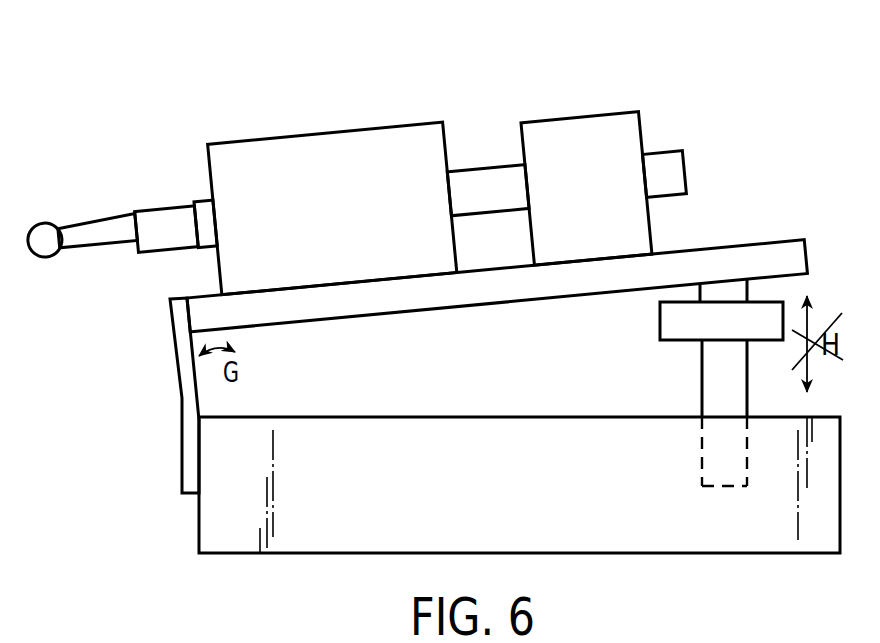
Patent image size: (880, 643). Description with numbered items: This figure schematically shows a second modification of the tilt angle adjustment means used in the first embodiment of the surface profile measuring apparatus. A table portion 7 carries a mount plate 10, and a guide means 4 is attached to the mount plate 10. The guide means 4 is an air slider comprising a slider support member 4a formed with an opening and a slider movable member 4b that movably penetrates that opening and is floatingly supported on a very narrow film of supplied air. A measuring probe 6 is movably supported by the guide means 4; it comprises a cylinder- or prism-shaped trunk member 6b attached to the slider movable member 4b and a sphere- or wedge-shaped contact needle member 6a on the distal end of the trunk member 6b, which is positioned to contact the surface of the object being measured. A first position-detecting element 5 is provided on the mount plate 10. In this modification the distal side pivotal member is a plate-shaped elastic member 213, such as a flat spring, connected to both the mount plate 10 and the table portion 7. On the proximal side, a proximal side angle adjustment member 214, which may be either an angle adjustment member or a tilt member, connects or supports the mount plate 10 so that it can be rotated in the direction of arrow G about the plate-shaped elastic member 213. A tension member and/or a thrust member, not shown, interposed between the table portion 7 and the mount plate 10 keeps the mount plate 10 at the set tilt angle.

The guide means 4 is at (345, 149).
The slider support member 4a is at (277, 147).
The slider movable member 4b is at (200, 210).
The first position-detecting element 5 is at (588, 130).
The measuring probe 6 is at (105, 260).
The contact needle member 6a is at (42, 237).
The trunk member 6b is at (146, 225).
The table portion 7 is at (767, 541).
The mount plate 10 is at (748, 255).
The plate-shaped elastic member 213 is at (181, 398).
The proximal side angle adjustment member 214 is at (698, 381).